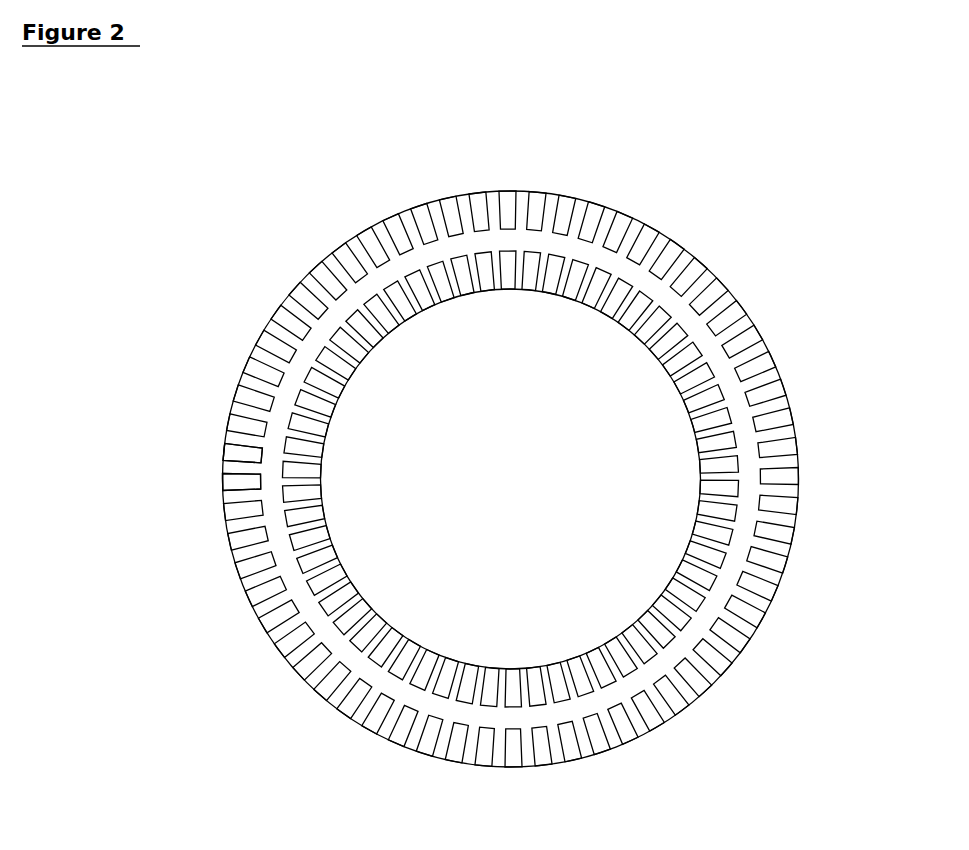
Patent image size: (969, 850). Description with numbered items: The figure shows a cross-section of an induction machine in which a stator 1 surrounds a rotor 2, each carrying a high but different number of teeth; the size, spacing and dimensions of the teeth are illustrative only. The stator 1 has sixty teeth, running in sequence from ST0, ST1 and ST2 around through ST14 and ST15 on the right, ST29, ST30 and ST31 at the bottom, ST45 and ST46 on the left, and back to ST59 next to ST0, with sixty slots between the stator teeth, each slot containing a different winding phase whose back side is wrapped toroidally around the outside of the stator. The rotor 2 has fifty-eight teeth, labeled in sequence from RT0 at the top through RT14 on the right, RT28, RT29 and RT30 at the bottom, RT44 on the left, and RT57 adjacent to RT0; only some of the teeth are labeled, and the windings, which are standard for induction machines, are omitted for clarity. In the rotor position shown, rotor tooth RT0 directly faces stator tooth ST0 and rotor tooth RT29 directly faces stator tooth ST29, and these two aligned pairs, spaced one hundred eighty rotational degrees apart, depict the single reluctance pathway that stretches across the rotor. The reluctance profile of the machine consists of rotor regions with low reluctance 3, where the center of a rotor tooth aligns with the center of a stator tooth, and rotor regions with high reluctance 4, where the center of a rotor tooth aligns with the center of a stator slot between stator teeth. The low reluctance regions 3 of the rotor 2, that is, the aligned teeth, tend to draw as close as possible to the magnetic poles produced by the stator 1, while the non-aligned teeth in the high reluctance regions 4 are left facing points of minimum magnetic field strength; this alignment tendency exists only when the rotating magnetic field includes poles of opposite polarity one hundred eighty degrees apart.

The stator 1 is at (795, 422).
The rotor 2 is at (523, 481).
The rotor region with low reluctance 3 is at (507, 235).
The rotor region with high reluctance 4 is at (267, 479).
The stator tooth ST0 is at (507, 204).
The stator tooth ST1 is at (537, 206).
The stator tooth ST2 is at (563, 207).
The stator tooth ST14 is at (787, 447).
The stator tooth ST15 is at (790, 475).
The stator tooth ST29 is at (540, 745).
The stator tooth ST30 is at (515, 745).
The stator tooth ST31 is at (483, 735).
The stator tooth ST45 is at (222, 480).
The stator tooth ST46 is at (224, 455).
The stator tooth ST59 is at (478, 206).
The rotor tooth RT0 is at (512, 273).
The rotor tooth RT14 is at (718, 462).
The rotor tooth RT28 is at (530, 678).
The rotor tooth RT29 is at (510, 690).
The rotor tooth RT30 is at (472, 683).
The rotor tooth RT44 is at (305, 468).
The rotor tooth RT57 is at (490, 273).